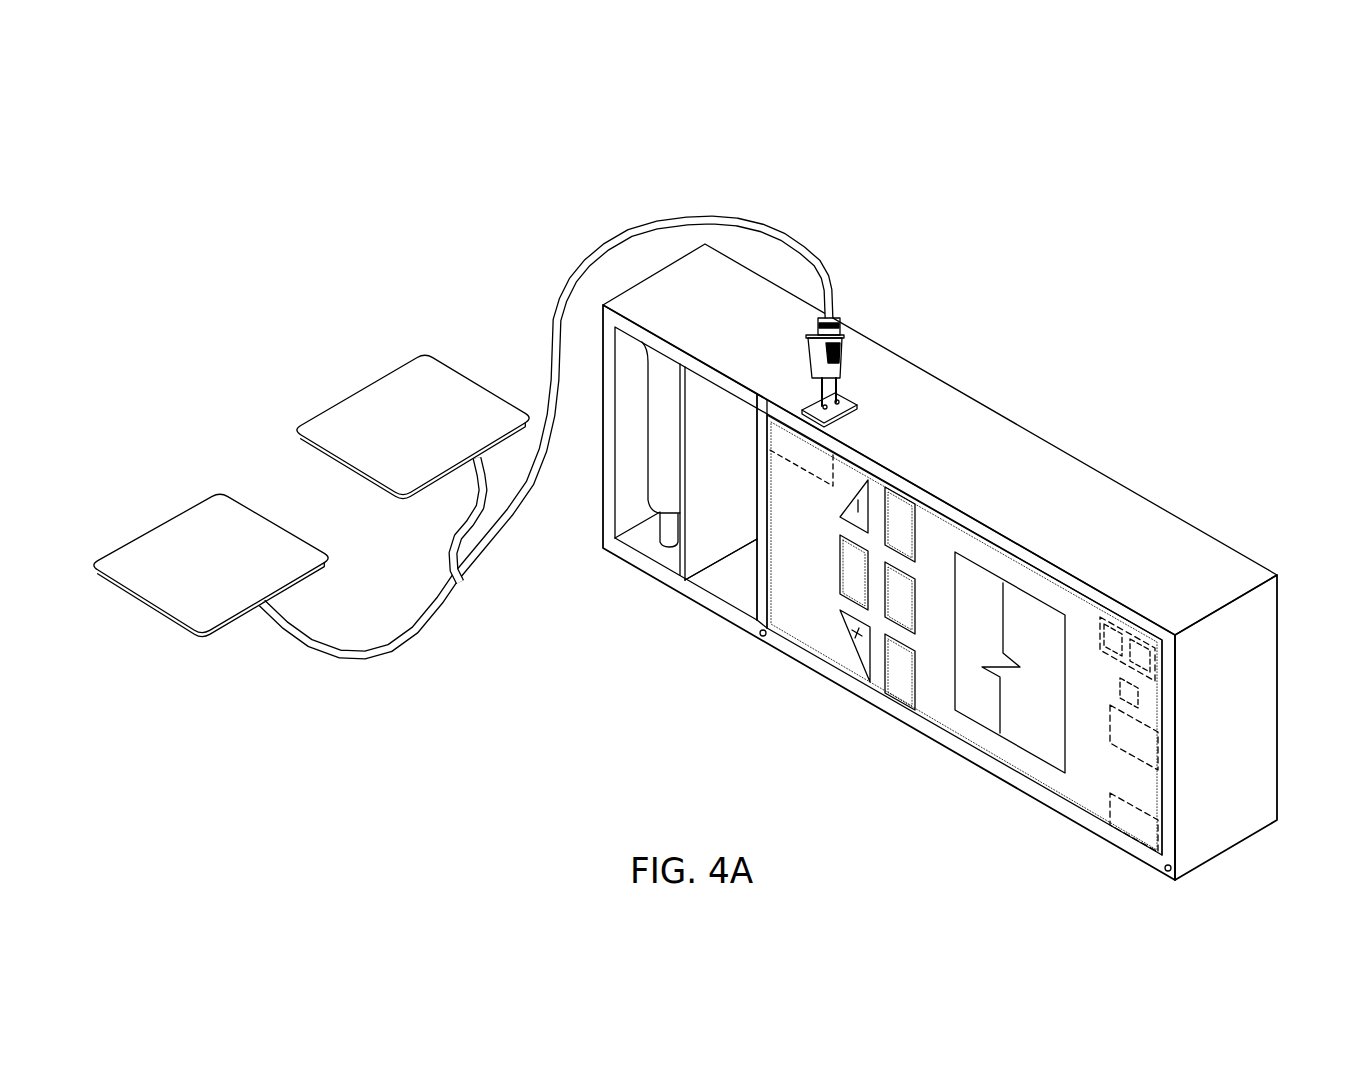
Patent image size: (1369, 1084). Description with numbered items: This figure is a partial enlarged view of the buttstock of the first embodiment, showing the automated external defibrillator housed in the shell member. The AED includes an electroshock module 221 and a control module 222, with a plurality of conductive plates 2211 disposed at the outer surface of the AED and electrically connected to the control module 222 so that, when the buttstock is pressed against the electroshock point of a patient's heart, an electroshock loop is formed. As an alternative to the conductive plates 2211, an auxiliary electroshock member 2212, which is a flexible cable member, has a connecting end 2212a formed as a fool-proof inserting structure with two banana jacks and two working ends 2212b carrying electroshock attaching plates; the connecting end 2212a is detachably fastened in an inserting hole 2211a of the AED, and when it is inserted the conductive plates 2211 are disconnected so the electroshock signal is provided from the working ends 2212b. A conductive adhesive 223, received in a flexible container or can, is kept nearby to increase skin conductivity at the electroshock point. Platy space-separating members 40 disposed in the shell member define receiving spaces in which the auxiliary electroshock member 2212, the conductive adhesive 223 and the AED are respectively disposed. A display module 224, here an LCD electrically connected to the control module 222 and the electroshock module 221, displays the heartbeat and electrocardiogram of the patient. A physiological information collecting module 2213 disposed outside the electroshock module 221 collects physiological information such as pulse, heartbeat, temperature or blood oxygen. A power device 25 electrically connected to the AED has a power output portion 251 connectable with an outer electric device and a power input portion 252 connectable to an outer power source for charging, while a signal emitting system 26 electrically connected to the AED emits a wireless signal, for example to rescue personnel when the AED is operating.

The electroshock module 221 is at (548, 377).
The conductive plates 2211 is at (818, 457).
The inserting hole 2211a is at (850, 417).
The auxiliary electroshock member 2212 is at (772, 228).
The connecting end 2212a is at (836, 400).
The working end 2212b is at (453, 392).
The control module 222 is at (860, 648).
The conductive adhesive 223 is at (664, 457).
The display module 224 is at (973, 708).
The power device 25 is at (1133, 620).
The power output portion 251 is at (1103, 600).
The power input portion 252 is at (1150, 627).
The physiological information collecting module 2213 is at (1140, 695).
The signal emitting system 26 is at (1143, 737).
The space-separating member 40 is at (698, 537).